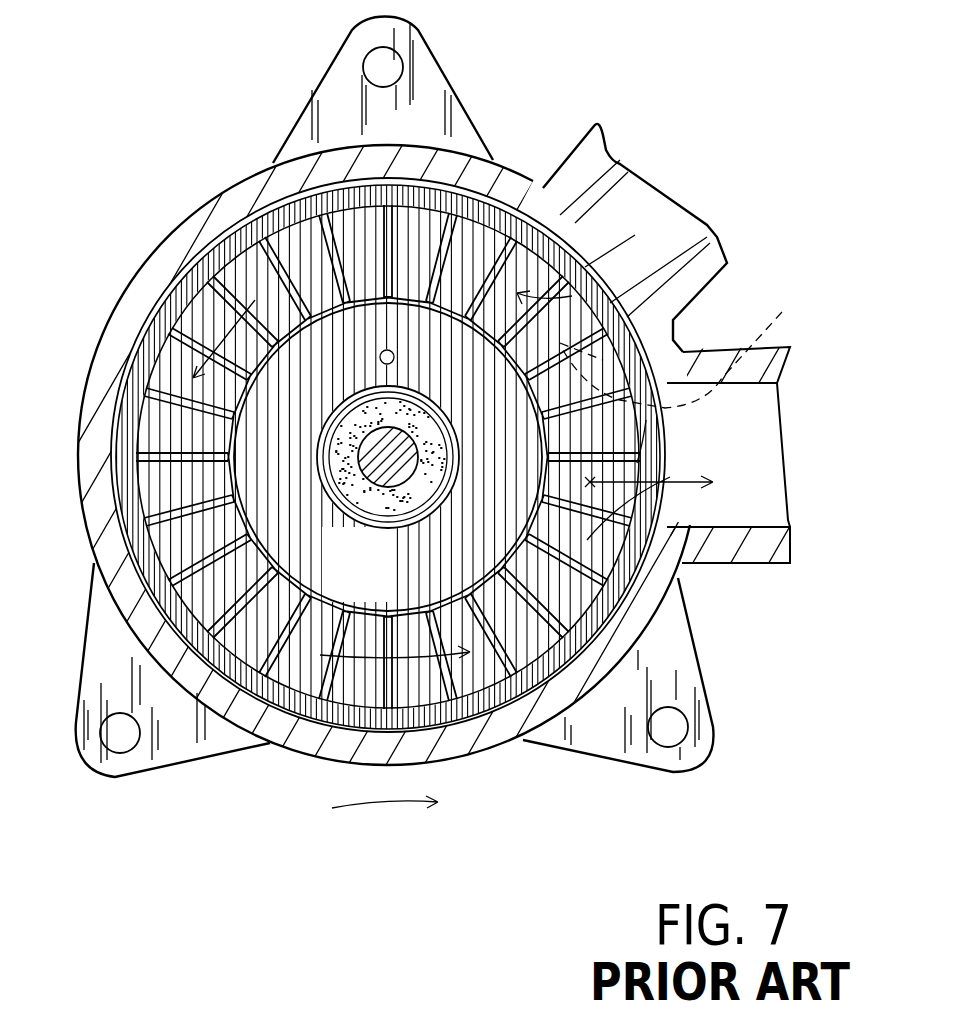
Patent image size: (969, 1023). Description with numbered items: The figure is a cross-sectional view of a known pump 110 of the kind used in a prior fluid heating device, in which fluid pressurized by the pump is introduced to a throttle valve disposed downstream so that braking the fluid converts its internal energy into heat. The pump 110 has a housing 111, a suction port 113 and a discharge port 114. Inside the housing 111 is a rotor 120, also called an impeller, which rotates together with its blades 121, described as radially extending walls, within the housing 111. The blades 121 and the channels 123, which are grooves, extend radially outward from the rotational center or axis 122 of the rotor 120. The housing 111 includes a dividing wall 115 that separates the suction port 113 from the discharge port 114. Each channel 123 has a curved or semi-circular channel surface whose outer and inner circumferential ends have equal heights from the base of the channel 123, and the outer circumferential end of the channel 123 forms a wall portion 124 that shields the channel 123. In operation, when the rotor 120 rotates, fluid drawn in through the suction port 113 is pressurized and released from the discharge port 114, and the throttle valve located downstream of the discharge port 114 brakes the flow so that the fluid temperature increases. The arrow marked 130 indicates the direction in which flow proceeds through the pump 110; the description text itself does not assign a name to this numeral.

The pump 110 is at (545, 113).
The housing 111 is at (229, 196).
The suction port 113 is at (605, 178).
The discharge port 114 is at (735, 527).
The dividing wall 115 is at (701, 339).
The rotor 120 is at (170, 270).
The blades 121 is at (637, 463).
The rotational axis 122 is at (377, 482).
The channels 123 is at (627, 497).
The wall portion 124 is at (670, 410).
The air flow direction 130 is at (385, 825).